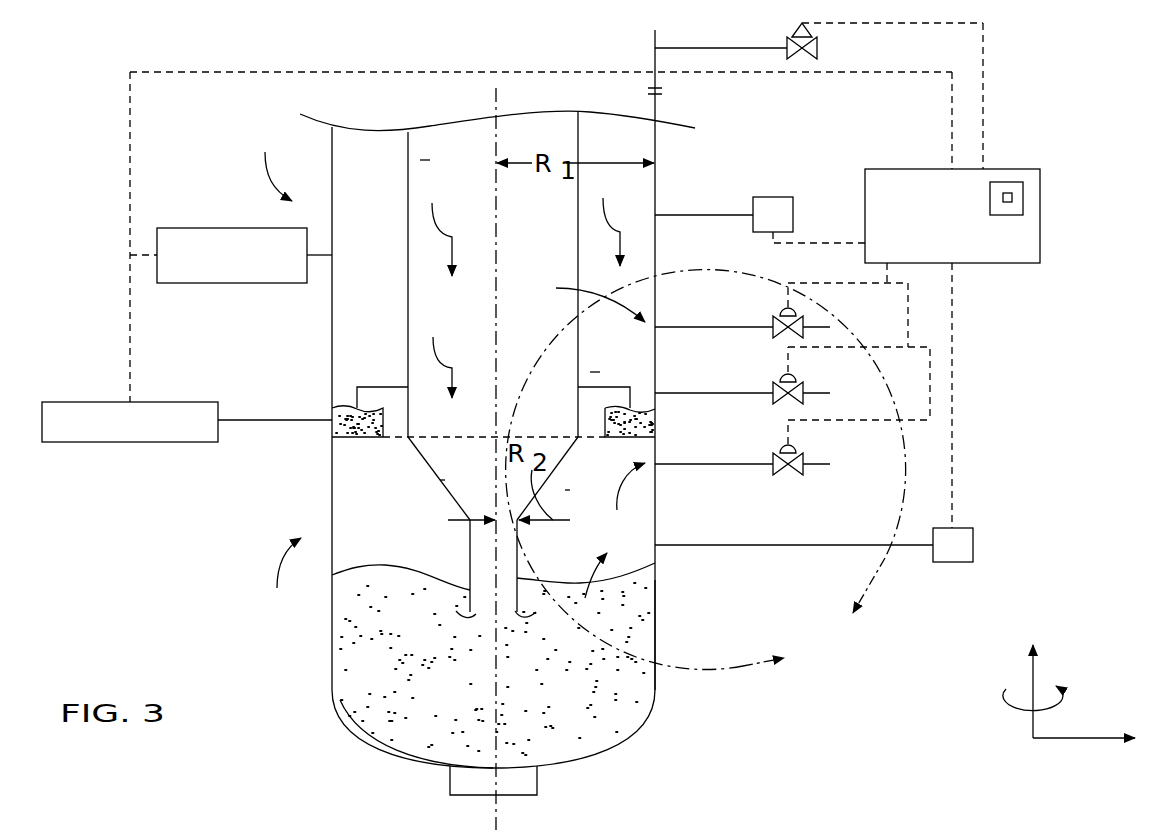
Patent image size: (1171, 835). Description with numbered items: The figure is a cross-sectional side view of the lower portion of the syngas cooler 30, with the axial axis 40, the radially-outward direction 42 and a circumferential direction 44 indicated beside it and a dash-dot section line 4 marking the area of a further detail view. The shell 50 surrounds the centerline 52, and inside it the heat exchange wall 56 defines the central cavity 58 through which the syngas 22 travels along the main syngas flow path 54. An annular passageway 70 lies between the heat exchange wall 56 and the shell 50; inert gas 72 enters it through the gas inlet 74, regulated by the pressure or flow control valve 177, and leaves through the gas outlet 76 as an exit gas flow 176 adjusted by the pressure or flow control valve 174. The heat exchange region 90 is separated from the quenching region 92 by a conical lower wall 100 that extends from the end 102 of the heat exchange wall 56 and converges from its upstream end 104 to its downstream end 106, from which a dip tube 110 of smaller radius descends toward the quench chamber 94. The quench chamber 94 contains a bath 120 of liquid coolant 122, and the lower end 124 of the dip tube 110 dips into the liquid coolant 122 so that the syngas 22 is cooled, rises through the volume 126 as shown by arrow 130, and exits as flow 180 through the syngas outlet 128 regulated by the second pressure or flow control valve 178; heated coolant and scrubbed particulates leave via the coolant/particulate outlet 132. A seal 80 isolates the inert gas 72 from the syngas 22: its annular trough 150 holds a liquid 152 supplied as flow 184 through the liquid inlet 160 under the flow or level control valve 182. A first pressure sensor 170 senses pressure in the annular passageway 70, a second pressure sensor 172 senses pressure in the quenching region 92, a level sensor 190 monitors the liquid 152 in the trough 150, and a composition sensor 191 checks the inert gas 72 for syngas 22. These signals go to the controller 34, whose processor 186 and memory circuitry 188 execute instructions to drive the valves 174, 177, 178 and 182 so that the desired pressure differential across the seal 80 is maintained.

The syngas cooler 30 is at (766, 111).
The shell 50 is at (657, 187).
The quench chamber 94 is at (658, 613).
The bath 120 is at (382, 720).
The coolant/particulate outlet 132 is at (537, 780).
The centerline 52 is at (495, 108).
The heat exchange wall 56 is at (577, 265).
The end of the heat exchange wall 102 is at (406, 420).
The central cavity 58 is at (452, 171).
The main syngas flow path 54 is at (435, 226).
The syngas 22 is at (436, 353).
The inert gas 72 is at (606, 218).
The annular passageway 70 is at (584, 375).
The exit gas flow 176 is at (580, 299).
The gas inlet 74 is at (722, 49).
The pressure or flow control valve 177 is at (820, 46).
The gas outlet 76 is at (690, 325).
The pressure or flow control valve 174 is at (775, 321).
The liquid inlet 160 is at (680, 396).
The flow or level control valve 182 is at (783, 401).
The syngas outlet 128 is at (718, 467).
The second pressure or flow control valve 178 is at (795, 477).
The first pressure sensor 170 is at (773, 196).
The second pressure sensor 172 is at (973, 547).
The controller 34 is at (1040, 253).
The processor 186 is at (1005, 181).
The memory circuitry 188 is at (1016, 198).
The composition sensor 191 is at (198, 228).
The level sensor 190 is at (130, 442).
The heat exchange region 90 is at (272, 163).
The quenching region 92 is at (282, 579).
The liquid 152 is at (352, 415).
The seal 80 is at (323, 405).
The trough 150 is at (340, 438).
The flow of liquid 184 is at (637, 397).
The lower wall 100 is at (424, 459).
The upstream end of the lower wall 104 is at (461, 470).
The downstream end of the lower wall 106 is at (440, 500).
The volume 126 is at (560, 491).
The dip tube 110 is at (470, 558).
The arrow 130 is at (589, 570).
The flow of syngas 180 is at (623, 501).
The liquid coolant 122 is at (352, 623).
The lower end of the dip tube 124 is at (482, 616).
The section line 4 is at (706, 485).
The axial axis 40 is at (1032, 660).
The radially-outward direction 42 is at (1095, 742).
The circumferential direction 44 is at (1018, 707).